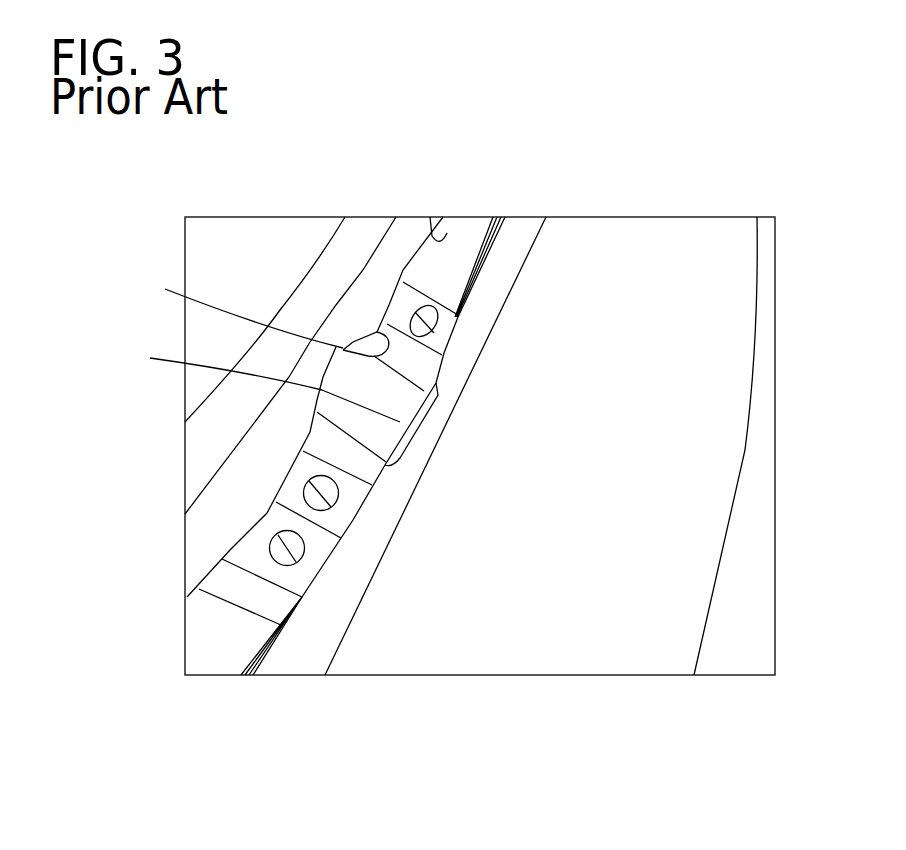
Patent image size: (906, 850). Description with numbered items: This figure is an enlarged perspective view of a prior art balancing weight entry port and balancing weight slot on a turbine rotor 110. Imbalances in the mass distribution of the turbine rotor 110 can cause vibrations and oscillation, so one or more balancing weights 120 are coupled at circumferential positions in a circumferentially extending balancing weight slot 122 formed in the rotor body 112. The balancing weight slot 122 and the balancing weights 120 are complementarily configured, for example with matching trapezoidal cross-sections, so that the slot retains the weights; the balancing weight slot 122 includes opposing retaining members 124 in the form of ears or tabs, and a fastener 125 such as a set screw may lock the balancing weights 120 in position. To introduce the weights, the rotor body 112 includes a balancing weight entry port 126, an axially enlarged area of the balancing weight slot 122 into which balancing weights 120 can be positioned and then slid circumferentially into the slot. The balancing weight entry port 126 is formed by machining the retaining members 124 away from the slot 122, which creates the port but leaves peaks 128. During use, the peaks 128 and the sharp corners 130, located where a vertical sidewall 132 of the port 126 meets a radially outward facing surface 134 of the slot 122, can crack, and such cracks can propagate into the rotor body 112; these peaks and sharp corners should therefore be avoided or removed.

The turbine rotor 110 is at (282, 232).
The rotor body 112 is at (222, 282).
The balancing weight 120 is at (408, 300).
The balancing weight slot 122 is at (489, 218).
The retaining members 124 is at (447, 233).
The fastener 125 is at (270, 547).
The balancing weight entry port 126 is at (343, 349).
The peaks 128 is at (317, 412).
The sharp corners 130 is at (323, 366).
The vertical sidewall 132 is at (490, 572).
The radially outward facing surface 134 is at (468, 230).